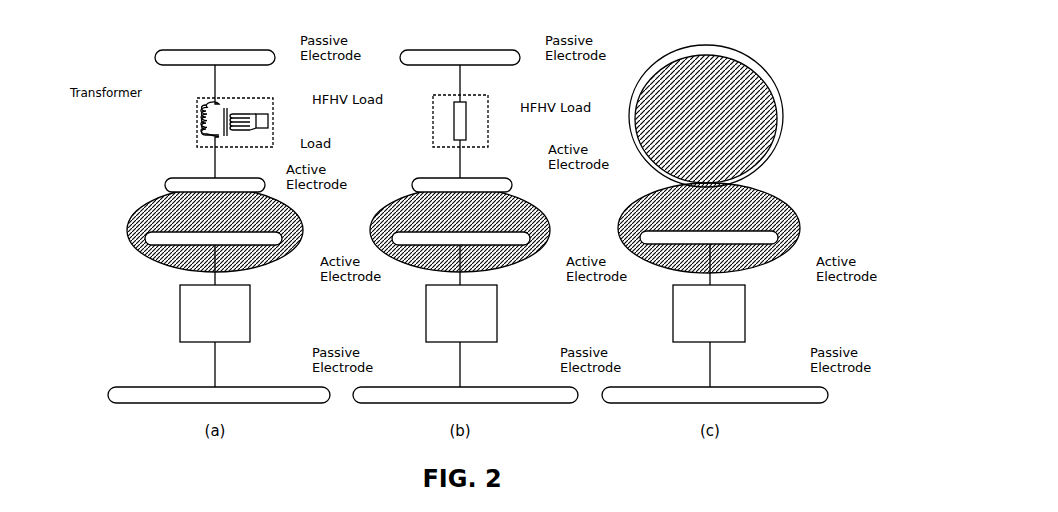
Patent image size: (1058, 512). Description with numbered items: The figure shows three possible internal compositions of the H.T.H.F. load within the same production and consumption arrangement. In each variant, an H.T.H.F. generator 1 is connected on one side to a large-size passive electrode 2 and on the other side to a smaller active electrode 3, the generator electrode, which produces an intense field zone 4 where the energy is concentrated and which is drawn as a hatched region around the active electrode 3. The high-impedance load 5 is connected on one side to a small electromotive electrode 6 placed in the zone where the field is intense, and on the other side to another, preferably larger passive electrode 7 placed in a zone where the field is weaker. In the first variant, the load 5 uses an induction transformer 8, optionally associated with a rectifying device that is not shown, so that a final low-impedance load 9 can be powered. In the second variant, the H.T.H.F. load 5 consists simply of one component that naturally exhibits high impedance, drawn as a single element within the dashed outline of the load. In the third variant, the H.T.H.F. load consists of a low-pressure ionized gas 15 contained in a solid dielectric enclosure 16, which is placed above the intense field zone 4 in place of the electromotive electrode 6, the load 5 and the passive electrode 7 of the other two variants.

The H.T.H.F. generator 1 is at (238, 327).
The passive electrode 2 is at (262, 393).
The active electrode 3 is at (286, 246).
The intense field zone 4 is at (303, 217).
The high-impedance load 5 is at (277, 121).
The electromotive electrode 6 is at (256, 186).
The passive electrode 7 is at (270, 57).
The induction transformer 8 is at (208, 117).
The low-impedance load 9 is at (265, 125).
The low-pressure ionized gas 15 is at (733, 130).
The solid dielectric enclosure 16 is at (752, 70).